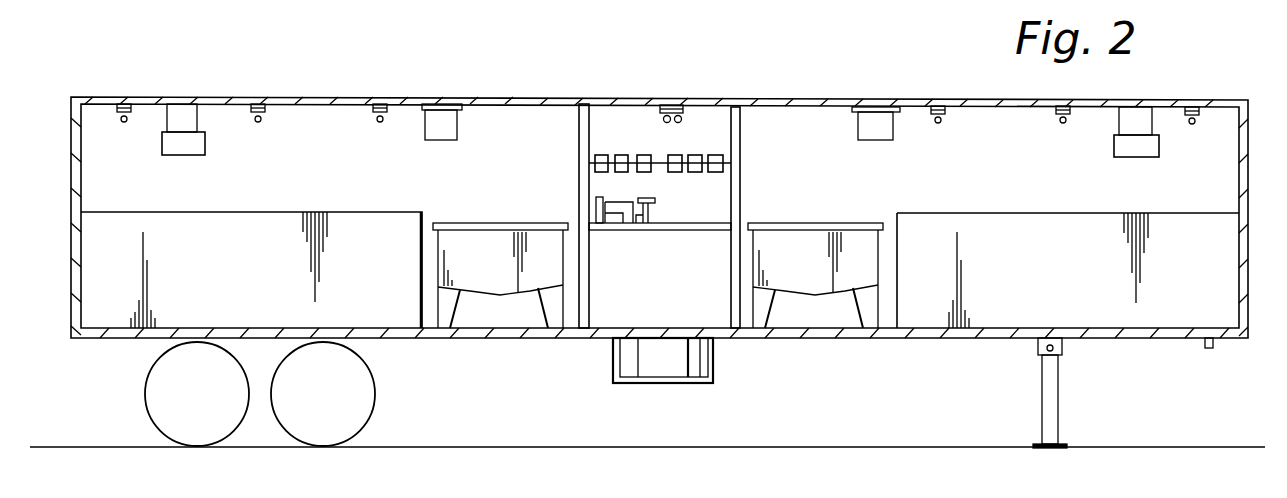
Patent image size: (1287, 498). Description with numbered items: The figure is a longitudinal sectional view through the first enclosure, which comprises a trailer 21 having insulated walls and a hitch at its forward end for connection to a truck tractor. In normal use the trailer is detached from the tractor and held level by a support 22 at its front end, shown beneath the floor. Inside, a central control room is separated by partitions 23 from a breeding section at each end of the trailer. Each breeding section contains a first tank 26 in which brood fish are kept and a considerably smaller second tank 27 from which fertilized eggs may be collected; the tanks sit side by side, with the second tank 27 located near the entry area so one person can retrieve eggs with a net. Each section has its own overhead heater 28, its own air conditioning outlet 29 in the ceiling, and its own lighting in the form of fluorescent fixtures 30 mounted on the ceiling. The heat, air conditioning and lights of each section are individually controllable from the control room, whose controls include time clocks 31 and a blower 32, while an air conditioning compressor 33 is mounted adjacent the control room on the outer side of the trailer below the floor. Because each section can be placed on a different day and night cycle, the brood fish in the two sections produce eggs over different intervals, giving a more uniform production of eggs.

The trailer 21 is at (1218, 100).
The support 22 is at (1055, 410).
The partitions 23 is at (579, 180).
The first tank 26 is at (261, 212).
The second tank 27 is at (510, 222).
The overhead heater 28 is at (457, 125).
The outlet 29 is at (162, 145).
The fluorescent fixtures 30 is at (264, 121).
The time clocks 31 is at (648, 155).
The blower 32 is at (622, 203).
The air conditioning compressor 33 is at (638, 362).